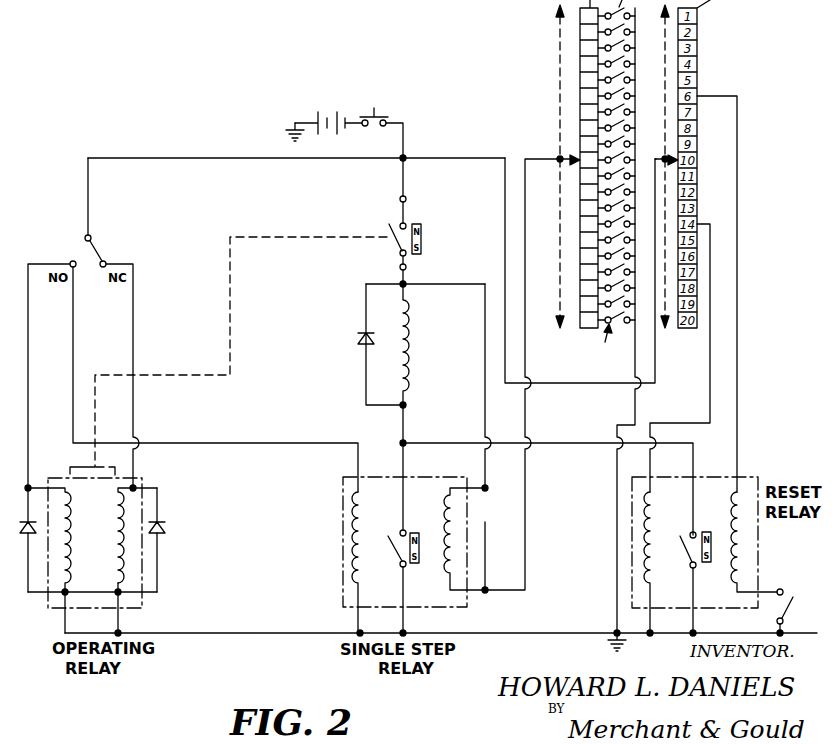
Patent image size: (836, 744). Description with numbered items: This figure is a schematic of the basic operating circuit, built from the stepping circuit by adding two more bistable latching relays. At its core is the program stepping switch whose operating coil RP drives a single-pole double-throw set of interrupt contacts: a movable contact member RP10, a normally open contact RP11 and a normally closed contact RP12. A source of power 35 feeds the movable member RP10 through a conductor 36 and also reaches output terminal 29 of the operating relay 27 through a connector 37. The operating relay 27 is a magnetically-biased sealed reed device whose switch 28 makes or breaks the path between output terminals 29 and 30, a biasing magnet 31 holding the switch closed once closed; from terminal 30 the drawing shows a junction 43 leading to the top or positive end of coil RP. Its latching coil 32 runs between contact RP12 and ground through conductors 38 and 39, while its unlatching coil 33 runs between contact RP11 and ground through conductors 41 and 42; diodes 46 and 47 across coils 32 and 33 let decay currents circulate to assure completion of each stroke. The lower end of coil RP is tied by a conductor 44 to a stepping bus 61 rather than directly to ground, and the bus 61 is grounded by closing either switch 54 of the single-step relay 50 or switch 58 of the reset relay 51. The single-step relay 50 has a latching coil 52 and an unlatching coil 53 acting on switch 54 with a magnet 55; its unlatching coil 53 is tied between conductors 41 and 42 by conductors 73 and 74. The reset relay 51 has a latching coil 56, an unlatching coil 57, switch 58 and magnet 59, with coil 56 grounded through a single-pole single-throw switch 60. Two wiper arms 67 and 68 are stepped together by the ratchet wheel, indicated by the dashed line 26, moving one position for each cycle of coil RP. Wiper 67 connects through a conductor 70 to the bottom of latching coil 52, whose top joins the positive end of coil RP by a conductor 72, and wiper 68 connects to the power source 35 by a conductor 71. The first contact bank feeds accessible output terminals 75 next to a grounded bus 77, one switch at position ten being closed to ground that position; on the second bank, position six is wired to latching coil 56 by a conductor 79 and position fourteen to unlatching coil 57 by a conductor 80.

The dashed line 26 is at (567, 164).
The operating relay 27 is at (50, 612).
The single-pole single-throw switch 28 is at (388, 225).
The output terminal 29 is at (406, 200).
The output terminal 30 is at (399, 267).
The biasing magnet 31 is at (423, 240).
The latching coil 32 is at (113, 558).
The unlatching coil 33 is at (83, 538).
The source of power 35 is at (337, 112).
The conductor 36 is at (197, 156).
The connector 37 is at (401, 178).
The conductor 38 is at (135, 407).
The conductor 39 is at (121, 614).
The conductor 41 is at (28, 440).
The conductor 42 is at (206, 632).
The junction conductor 43 is at (406, 282).
The conductor 44 is at (405, 426).
The diode 46 is at (165, 531).
The diode 47 is at (22, 536).
The single-step relay 50 is at (458, 608).
The reset relay 51 is at (762, 548).
The latching coil 52 is at (442, 521).
The unlatching coil 53 is at (366, 521).
The switch 54 is at (392, 568).
The magnet 55 is at (418, 566).
The latching coil 56 is at (742, 500).
The unlatching coil 57 is at (672, 512).
The switch 58 is at (685, 568).
The magnet 59 is at (708, 568).
The single-pole single-throw switch 60 is at (788, 604).
The stepping mode conductor or bus 61 is at (563, 443).
The wiper arm 67 is at (558, 157).
The wiper arm 68 is at (665, 157).
The conductor 70 is at (525, 357).
The conductor 71 is at (467, 156).
The conductor 72 is at (483, 389).
The conductor 73 is at (270, 442).
The conductor 74 is at (343, 607).
The output terminals 75 is at (597, 346).
The grounded bus 77 is at (638, 402).
The conductor 79 is at (740, 262).
The conductor 80 is at (710, 223).
The operating coil RP is at (406, 352).
The movable contact member RP10 is at (93, 246).
The normally open contact RP11 is at (72, 261).
The normally closed contact RP12 is at (104, 261).